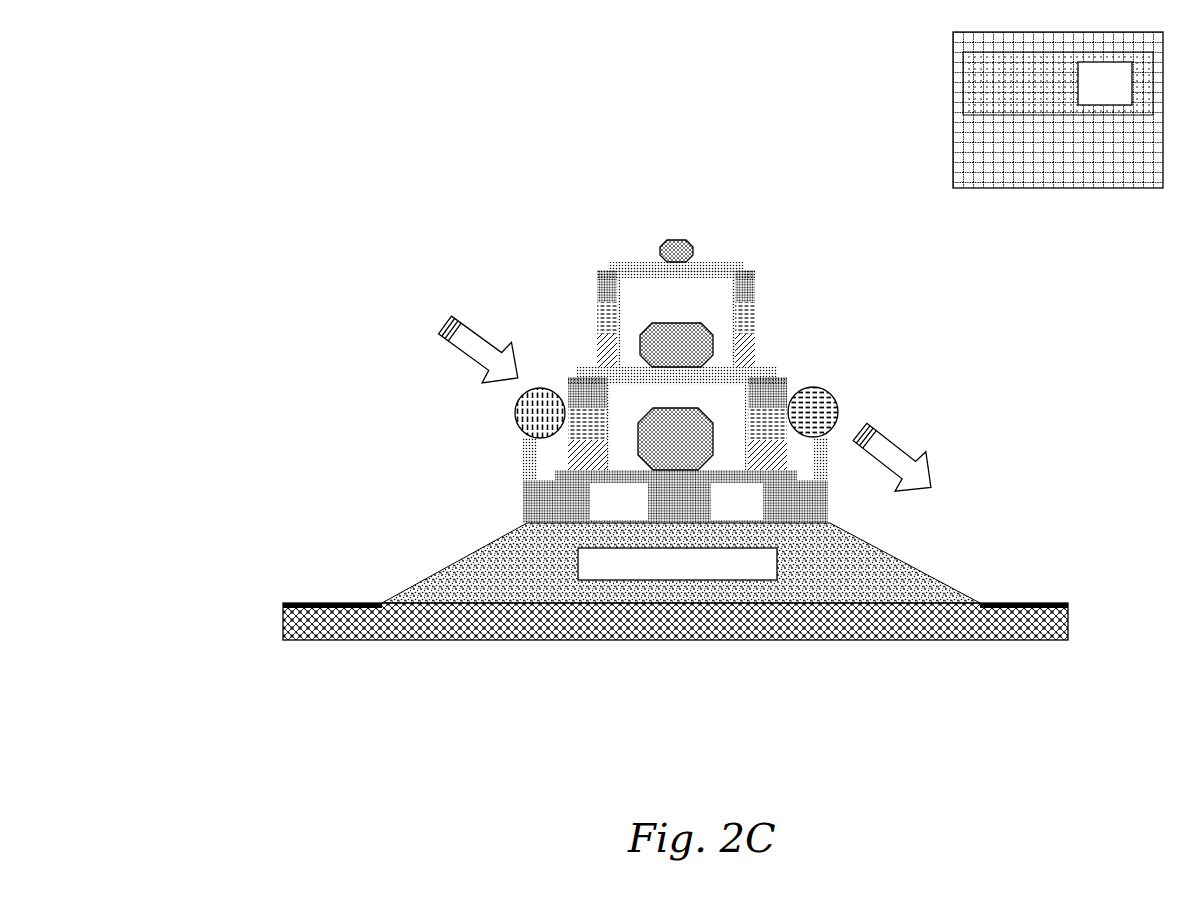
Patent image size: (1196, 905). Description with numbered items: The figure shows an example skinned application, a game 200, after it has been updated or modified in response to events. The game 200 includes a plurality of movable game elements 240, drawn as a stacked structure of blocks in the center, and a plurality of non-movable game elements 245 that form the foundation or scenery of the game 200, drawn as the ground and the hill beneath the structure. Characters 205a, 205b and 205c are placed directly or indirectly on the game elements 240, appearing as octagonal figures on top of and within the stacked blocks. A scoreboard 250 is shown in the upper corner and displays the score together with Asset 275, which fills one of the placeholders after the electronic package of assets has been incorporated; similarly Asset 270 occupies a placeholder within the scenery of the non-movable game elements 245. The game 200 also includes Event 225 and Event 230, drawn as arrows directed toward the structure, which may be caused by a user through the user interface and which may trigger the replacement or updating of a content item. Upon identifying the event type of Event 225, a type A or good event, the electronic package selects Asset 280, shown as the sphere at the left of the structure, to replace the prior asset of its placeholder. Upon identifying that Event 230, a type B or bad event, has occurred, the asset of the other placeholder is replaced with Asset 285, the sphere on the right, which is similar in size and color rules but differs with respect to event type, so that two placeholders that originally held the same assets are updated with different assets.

The game 200 is at (273, 167).
The movable game elements 240 is at (315, 218).
The non-movable game elements 245 is at (263, 535).
The scoreboard 250 is at (960, 93).
The Asset 275 is at (1056, 159).
The Asset 270 is at (677, 564).
The Asset 280 is at (517, 414).
The Asset 285 is at (838, 412).
The Event 225 is at (438, 324).
The Event 230 is at (937, 490).
The character 205a is at (693, 251).
The character 205b is at (640, 346).
The character 205c is at (675, 407).